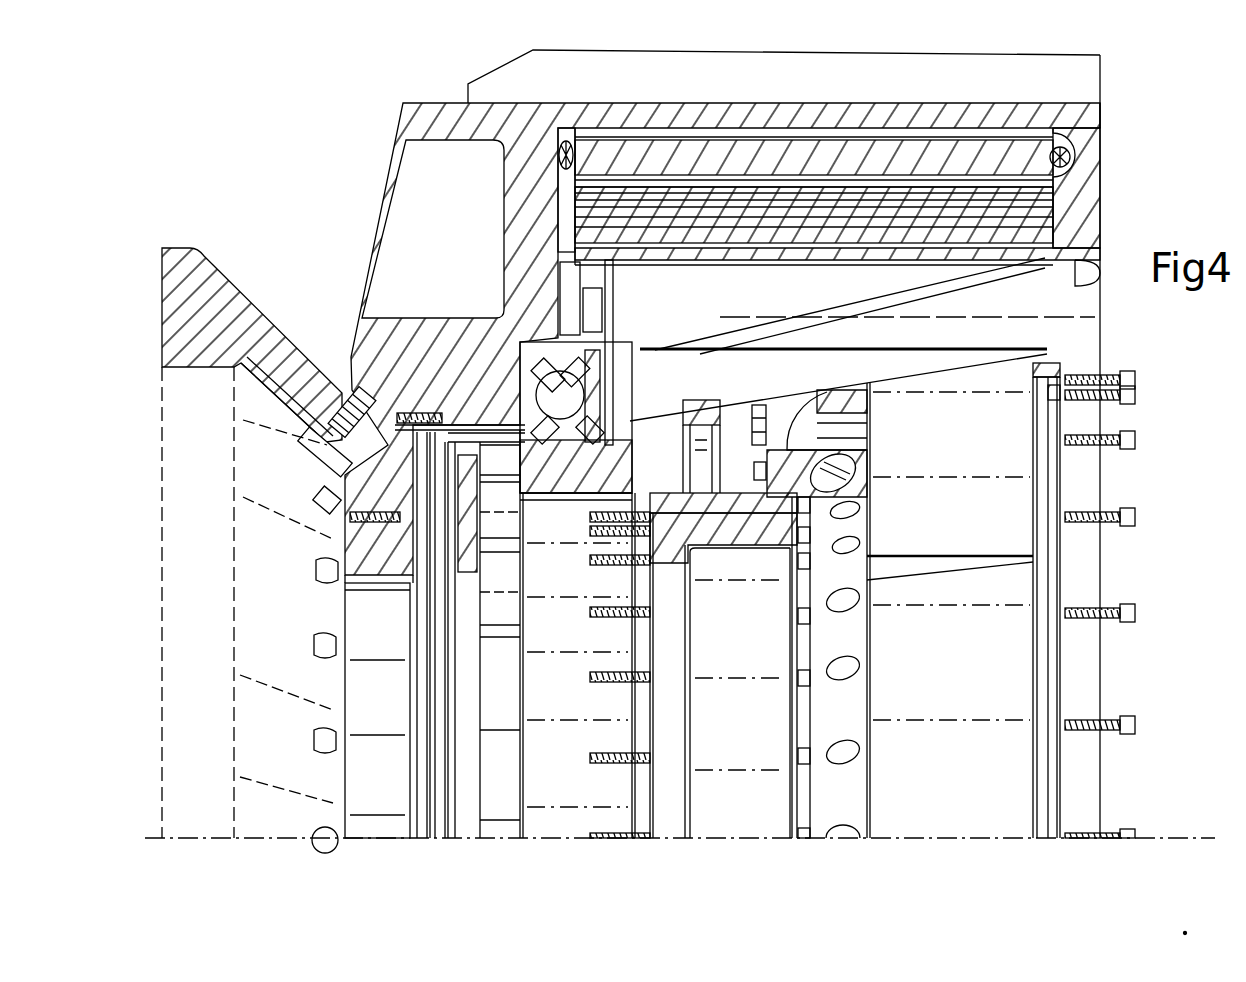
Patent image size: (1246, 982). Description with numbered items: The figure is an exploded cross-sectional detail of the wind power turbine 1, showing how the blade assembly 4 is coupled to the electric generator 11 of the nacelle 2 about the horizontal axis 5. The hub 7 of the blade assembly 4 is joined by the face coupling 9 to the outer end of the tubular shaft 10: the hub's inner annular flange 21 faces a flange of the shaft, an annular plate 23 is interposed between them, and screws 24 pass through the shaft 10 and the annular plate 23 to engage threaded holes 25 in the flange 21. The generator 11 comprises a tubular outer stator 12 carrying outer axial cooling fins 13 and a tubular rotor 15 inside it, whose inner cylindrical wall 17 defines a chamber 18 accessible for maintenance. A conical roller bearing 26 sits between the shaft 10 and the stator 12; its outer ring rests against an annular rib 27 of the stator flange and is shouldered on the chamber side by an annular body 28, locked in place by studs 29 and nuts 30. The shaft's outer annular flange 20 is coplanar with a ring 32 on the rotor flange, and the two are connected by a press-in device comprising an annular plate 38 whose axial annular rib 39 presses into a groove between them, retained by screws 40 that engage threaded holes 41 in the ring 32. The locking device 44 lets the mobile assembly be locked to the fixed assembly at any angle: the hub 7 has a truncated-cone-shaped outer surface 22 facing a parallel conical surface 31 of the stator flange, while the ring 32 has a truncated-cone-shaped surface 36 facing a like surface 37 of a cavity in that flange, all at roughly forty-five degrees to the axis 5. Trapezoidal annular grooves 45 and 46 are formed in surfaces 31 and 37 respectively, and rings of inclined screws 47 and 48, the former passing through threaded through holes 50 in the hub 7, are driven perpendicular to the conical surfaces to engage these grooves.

The wind power turbine 1 is at (232, 190).
The nacelle 2 is at (1112, 115).
The blade assembly 4 is at (186, 236).
The axis 5 is at (1142, 835).
The hub 7 is at (185, 318).
The face coupling 9 is at (525, 785).
The tubular shaft 10 is at (765, 642).
The electric generator 11 is at (1112, 190).
The tubular outer stator 12 is at (1102, 98).
The outer axial cooling fins 13 is at (1078, 78).
The tubular rotor 15 is at (1045, 222).
The inner cylindrical wall 17 is at (1088, 262).
The chamber 18 is at (1095, 285).
The outer annular flange 20 is at (862, 474).
The inner annular flange 21 is at (345, 582).
The truncated-cone-shaped outer surface 22 is at (337, 372).
The annular plate 23 is at (455, 585).
The screws 24 is at (726, 540).
The threaded hole 25 is at (345, 522).
The conical roller bearing 26 is at (574, 512).
The annular rib 27 is at (446, 345).
The annular body 28 is at (706, 398).
The studs 29 is at (492, 335).
The nut 30 is at (767, 403).
The conical surface 31 is at (318, 438).
The ring 32 is at (600, 326).
The truncated-cone-shaped surface 36 is at (590, 305).
The truncated-cone-shaped surface 37 is at (612, 430).
The annular plate 38 is at (1065, 588).
The axial annular rib 39 is at (1065, 362).
The screws 40 is at (1136, 390).
The threaded hole 41 is at (615, 342).
The locking device 44 is at (322, 355).
The annular groove 45 is at (395, 342).
The annular groove 46 is at (508, 268).
The screws 47 is at (336, 456).
The screws 48 is at (514, 240).
The threaded through hole 50 is at (318, 503).